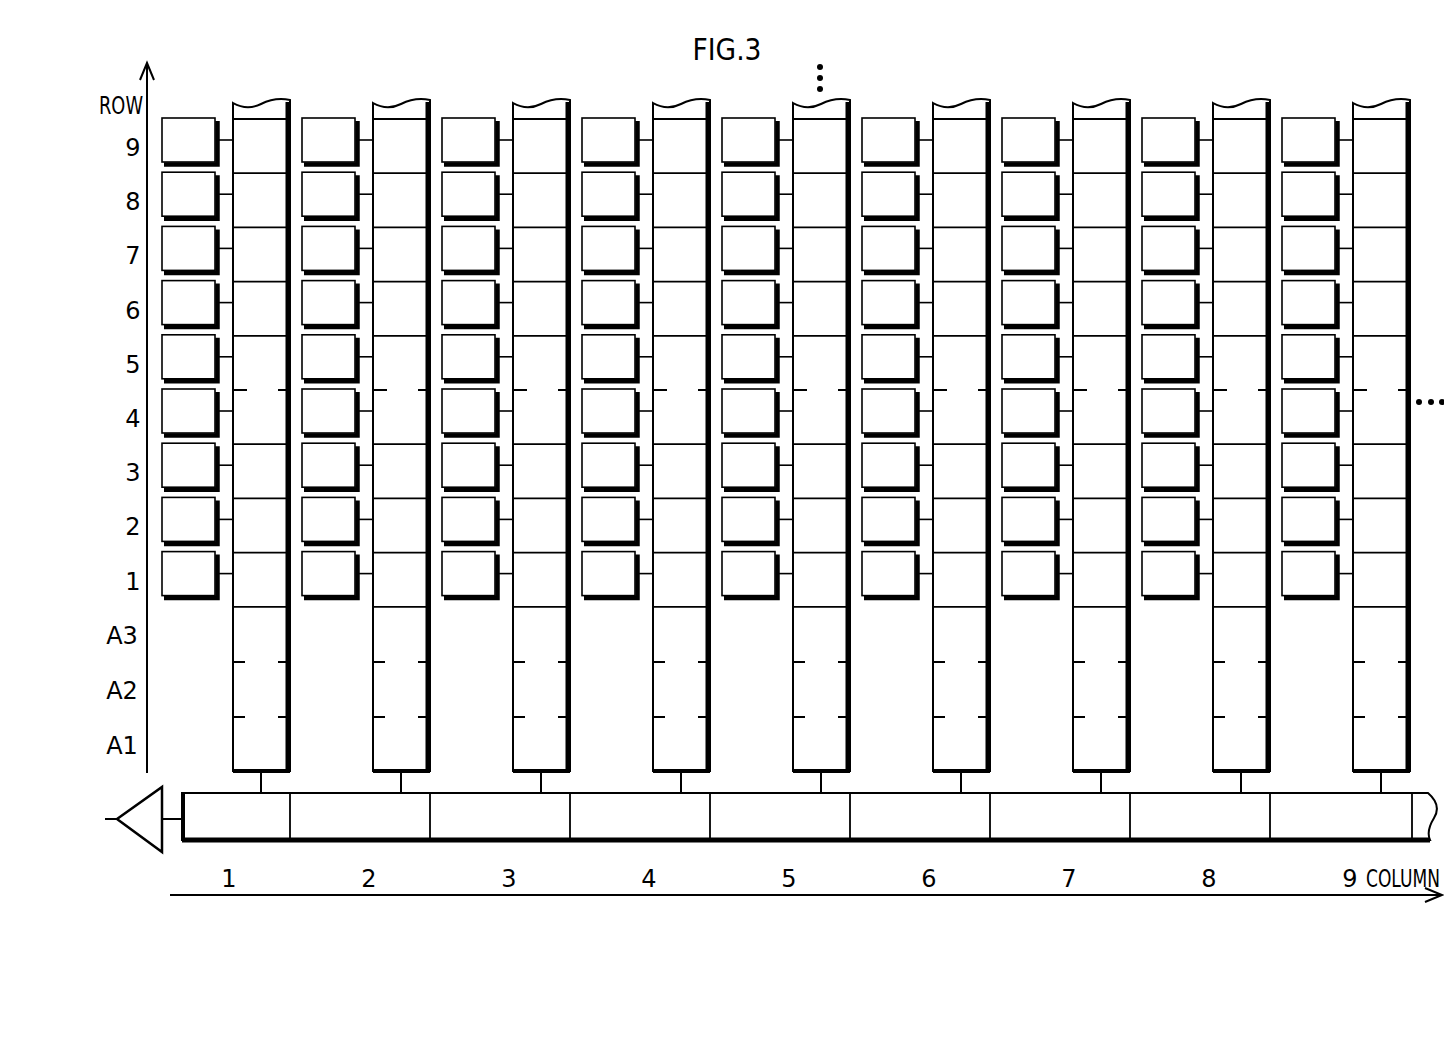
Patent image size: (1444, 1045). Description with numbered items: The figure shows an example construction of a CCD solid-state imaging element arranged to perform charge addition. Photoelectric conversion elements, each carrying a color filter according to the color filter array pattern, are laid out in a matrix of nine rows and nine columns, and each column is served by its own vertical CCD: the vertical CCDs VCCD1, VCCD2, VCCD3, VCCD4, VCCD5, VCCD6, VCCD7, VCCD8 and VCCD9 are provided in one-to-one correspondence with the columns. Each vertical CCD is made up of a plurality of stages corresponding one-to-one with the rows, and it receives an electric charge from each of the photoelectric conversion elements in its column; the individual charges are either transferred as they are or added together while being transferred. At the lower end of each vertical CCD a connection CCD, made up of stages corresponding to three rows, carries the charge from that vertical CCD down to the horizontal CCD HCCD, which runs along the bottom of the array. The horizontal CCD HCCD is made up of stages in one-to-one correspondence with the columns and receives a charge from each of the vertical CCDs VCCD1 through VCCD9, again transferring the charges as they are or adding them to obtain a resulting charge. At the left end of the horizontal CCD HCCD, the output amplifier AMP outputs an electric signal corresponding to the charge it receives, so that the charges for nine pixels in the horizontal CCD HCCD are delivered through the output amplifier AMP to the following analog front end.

The horizontal CCD HCCD is at (809, 816).
The output amplifier AMP is at (141, 838).
The vertical CCD VCCD1 is at (226, 446).
The vertical CCD VCCD2 is at (366, 446).
The vertical CCD VCCD3 is at (506, 446).
The vertical CCD VCCD4 is at (646, 446).
The vertical CCD VCCD5 is at (786, 446).
The vertical CCD VCCD6 is at (926, 446).
The vertical CCD VCCD7 is at (1066, 446).
The vertical CCD VCCD8 is at (1206, 446).
The vertical CCD VCCD9 is at (1346, 446).